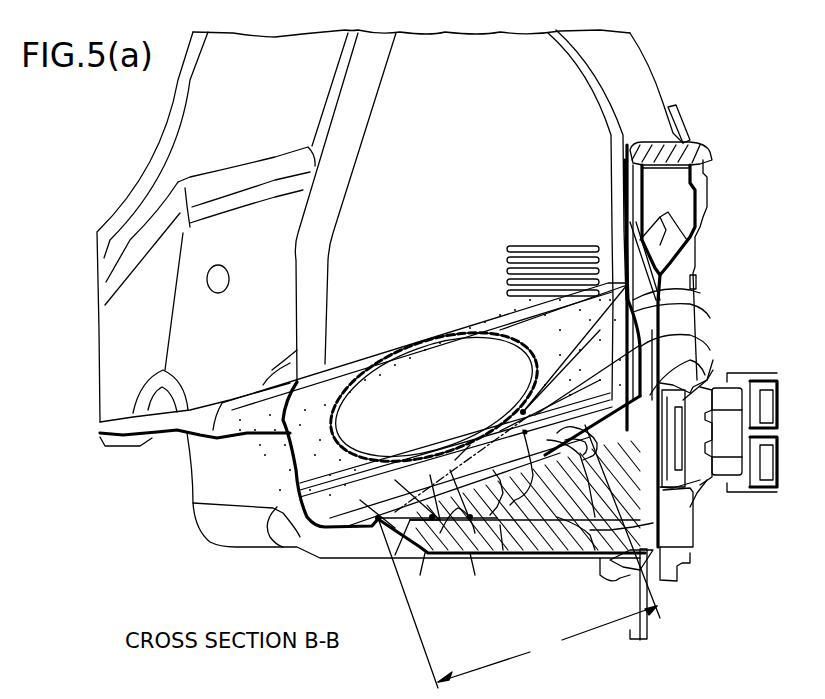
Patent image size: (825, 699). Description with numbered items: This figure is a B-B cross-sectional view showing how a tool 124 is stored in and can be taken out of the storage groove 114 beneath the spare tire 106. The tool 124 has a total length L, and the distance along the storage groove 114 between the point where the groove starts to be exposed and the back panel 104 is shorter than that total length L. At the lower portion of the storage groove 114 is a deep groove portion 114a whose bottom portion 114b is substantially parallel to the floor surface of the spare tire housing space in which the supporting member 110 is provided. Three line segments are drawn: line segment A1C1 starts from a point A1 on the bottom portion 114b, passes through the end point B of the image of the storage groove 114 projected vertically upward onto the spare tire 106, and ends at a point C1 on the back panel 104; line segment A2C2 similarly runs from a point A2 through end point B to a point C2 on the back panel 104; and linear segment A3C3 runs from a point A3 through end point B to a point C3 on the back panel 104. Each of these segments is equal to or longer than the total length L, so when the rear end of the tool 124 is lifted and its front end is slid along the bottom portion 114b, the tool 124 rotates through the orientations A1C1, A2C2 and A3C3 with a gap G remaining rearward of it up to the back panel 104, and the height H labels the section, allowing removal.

The back panel 104 is at (630, 74).
The spare tire 106 is at (405, 342).
The supporting member 110 is at (583, 556).
The storage groove 114 is at (527, 549).
The deep groove portion 114a is at (465, 458).
The bottom portion 114b is at (462, 549).
The tool 124 is at (418, 508).
The point A1 is at (378, 520).
The point A2 is at (432, 520).
The point A3 is at (470, 520).
The end point B is at (518, 410).
The point C1 is at (665, 345).
The point C2 is at (640, 300).
The point C3 is at (603, 265).
The height position H is at (683, 380).
The gap G is at (568, 556).
The total length L is at (519, 556).